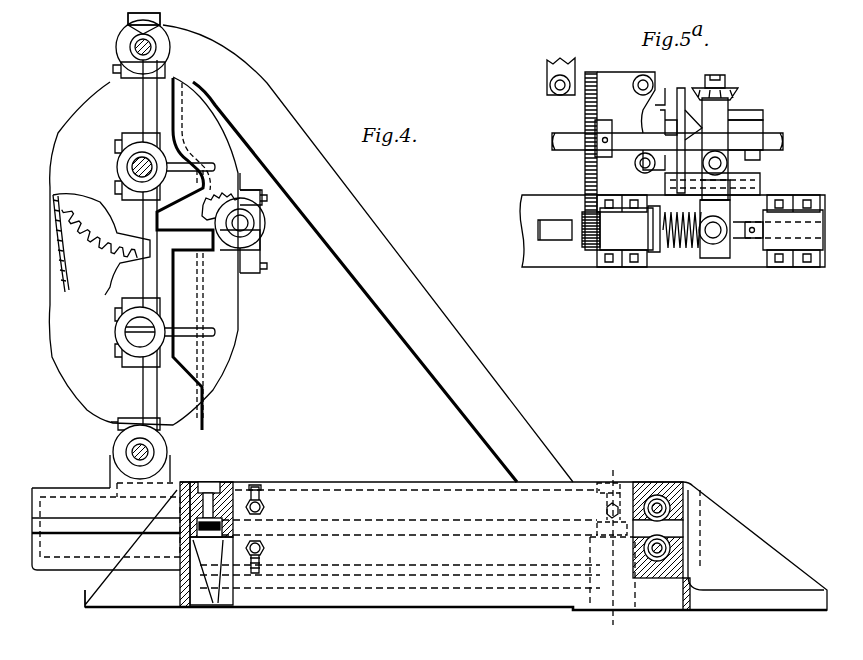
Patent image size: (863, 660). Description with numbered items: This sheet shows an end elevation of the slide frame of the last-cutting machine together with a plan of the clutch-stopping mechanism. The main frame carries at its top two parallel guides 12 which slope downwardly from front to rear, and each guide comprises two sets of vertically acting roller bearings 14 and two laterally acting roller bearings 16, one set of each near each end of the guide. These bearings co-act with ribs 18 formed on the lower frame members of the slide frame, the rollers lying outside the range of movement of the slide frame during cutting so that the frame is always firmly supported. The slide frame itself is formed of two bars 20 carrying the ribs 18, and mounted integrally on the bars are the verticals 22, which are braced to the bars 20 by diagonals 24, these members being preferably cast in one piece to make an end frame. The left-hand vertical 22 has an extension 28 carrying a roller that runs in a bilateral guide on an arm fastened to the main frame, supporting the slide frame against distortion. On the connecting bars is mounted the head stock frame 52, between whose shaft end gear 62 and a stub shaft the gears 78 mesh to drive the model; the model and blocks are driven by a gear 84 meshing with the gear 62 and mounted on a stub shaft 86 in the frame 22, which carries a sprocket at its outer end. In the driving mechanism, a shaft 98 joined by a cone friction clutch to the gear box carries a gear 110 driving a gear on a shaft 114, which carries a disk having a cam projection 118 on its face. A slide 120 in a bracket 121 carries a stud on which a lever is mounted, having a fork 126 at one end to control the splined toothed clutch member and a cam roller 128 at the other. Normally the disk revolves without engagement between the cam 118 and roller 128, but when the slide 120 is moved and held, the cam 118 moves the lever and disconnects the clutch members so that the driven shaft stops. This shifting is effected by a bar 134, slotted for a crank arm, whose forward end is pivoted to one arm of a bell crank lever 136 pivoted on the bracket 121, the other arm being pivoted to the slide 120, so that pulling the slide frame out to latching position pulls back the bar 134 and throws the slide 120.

In FIG. 4, the guides 12 is at (490, 503).
In FIG. 4, the vertically acting roller bearings 14 is at (257, 503).
In FIG. 4, the laterally acting roller bearings 16 is at (205, 537).
In FIG. 4, the ribs 18 is at (67, 525).
In FIG. 4, the bars 20 is at (72, 507).
In FIG. 4, the verticals 22 is at (200, 307).
In FIG. 4, the diagonals 24 is at (403, 292).
In FIG. 4, the extension 28 is at (160, 18).
In FIG. 4, the head stock frame 52 is at (163, 105).
In FIG. 4, the gear 62 is at (75, 222).
In FIG. 4, the gears 78 is at (73, 275).
In FIG. 4, the gear 84 is at (267, 197).
In FIG. 4, the stub shaft 86 is at (238, 222).
In FIG. 5A, the shaft 98 is at (558, 240).
In FIG. 5A, the gear 110 is at (590, 247).
In FIG. 5A, the shaft 114 is at (560, 143).
In FIG. 5A, the cam projection 118 is at (690, 82).
In FIG. 5A, the slide 120 is at (757, 128).
In FIG. 5A, the bracket 121 is at (752, 115).
In FIG. 5A, the fork 126 is at (718, 185).
In FIG. 5A, the cam roller 128 is at (735, 90).
In FIG. 5A, the bar 134 is at (549, 68).
In FIG. 5A, the bell crank lever 136 is at (583, 96).